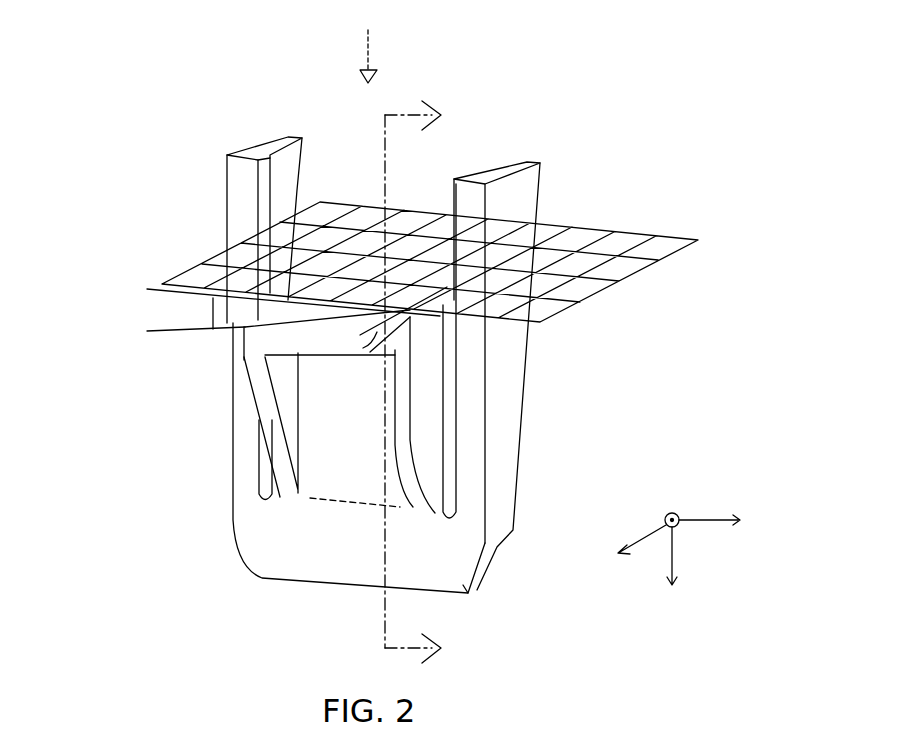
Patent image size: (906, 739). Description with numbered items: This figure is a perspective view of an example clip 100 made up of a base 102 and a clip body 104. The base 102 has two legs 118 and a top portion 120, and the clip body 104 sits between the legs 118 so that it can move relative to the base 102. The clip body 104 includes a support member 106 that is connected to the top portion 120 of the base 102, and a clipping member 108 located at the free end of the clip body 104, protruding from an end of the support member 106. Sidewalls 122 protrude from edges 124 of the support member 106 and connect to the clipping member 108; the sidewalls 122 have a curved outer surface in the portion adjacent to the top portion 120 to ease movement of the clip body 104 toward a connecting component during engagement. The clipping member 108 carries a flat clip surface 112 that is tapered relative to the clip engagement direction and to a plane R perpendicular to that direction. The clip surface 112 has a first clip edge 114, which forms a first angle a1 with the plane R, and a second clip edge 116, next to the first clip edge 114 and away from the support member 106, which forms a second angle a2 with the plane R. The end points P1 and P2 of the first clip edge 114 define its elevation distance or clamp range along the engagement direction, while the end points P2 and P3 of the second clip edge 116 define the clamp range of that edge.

The clip 100 is at (158, 50).
The base 102 is at (533, 314).
The clip body 104 is at (446, 472).
The support member 106 is at (343, 445).
The clipping member 108 is at (280, 343).
The clip surface 112 is at (318, 333).
The first clip edge 114 is at (443, 310).
The second clip edge 116 is at (318, 345).
The legs 118 is at (238, 190).
The top portion 120 is at (468, 594).
The sidewalls 122 is at (270, 425).
The edges 124 is at (320, 468).
The plane R is at (662, 244).
The end point P1 is at (440, 283).
The end point P2 is at (410, 317).
The end point P3 is at (234, 334).
The first angle a1 is at (370, 352).
The second angle a2 is at (213, 313).